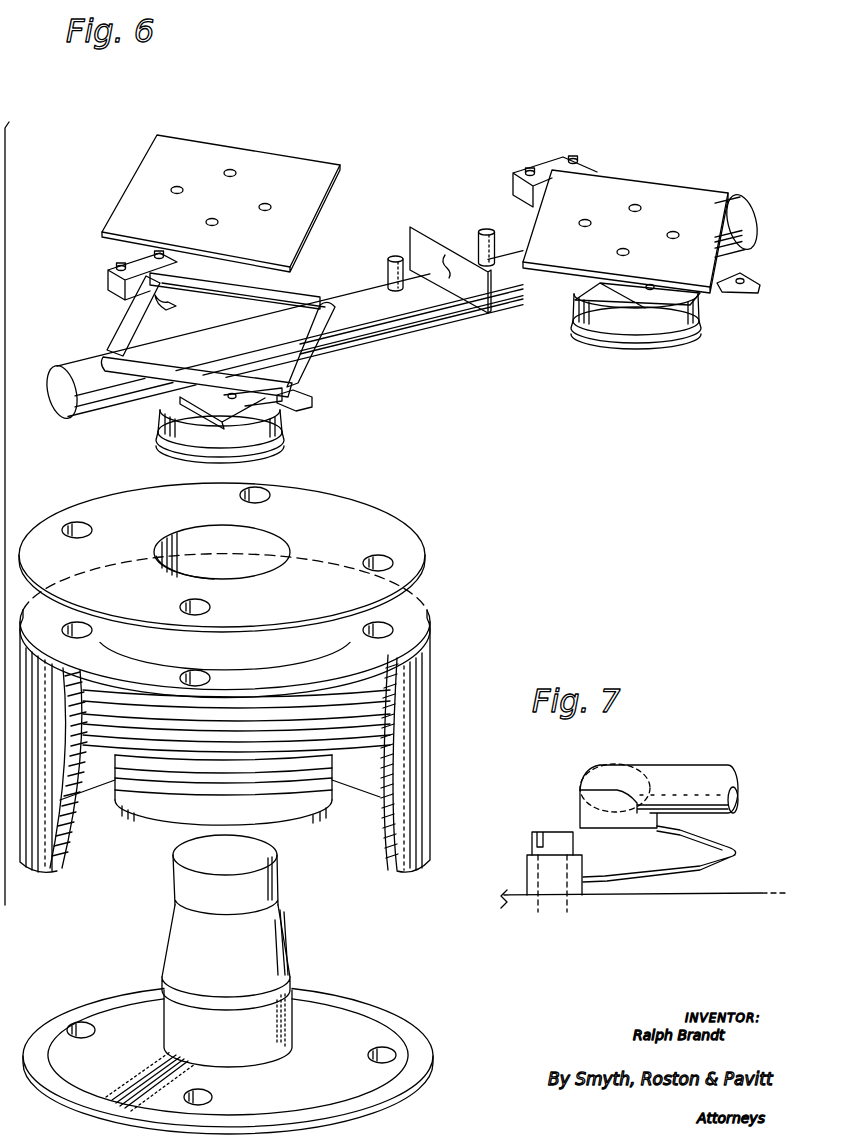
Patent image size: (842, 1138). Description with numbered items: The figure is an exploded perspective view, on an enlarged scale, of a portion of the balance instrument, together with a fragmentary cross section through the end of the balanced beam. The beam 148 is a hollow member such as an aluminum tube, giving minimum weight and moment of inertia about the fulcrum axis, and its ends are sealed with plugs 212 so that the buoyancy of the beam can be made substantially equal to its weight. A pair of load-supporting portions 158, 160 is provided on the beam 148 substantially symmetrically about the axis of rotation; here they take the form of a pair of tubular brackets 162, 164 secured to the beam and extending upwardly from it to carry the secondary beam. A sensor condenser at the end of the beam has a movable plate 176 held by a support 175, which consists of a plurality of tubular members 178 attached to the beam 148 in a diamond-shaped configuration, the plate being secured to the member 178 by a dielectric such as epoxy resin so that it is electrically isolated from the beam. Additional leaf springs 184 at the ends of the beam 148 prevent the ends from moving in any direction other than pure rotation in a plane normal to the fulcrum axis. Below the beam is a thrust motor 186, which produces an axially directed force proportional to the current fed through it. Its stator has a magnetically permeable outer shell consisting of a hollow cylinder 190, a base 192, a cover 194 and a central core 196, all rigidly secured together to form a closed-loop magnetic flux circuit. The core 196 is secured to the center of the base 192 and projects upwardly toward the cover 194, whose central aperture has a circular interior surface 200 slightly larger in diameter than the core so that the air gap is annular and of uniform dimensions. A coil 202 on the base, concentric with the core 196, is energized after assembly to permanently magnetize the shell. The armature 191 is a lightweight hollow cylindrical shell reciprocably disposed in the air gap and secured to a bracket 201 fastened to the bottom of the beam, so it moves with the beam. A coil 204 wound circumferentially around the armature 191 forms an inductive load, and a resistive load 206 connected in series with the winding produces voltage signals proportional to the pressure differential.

In FIG. 6, the beam 148 is at (428, 330).
In FIG. 6, the load-supporting portion 158 is at (412, 337).
In FIG. 6, the load-supporting portion 160 is at (516, 306).
In FIG. 6, the tubular bracket 162 is at (386, 275).
In FIG. 6, the tubular bracket 164 is at (478, 243).
In FIG. 6, the support 175 is at (292, 282).
In FIG. 6, the movable plate 176 is at (268, 153).
In FIG. 6, the tubular member 178 is at (693, 190).
In FIG. 7, the tubular member 178 is at (690, 782).
In FIG. 6, the leaf spring 184 is at (168, 306).
In FIG. 7, the leaf spring 184 is at (690, 860).
In FIG. 6, the thrust motor 186 is at (138, 873).
In FIG. 6, the hollow cylinder 190 is at (422, 714).
In FIG. 6, the armature 191 is at (276, 444).
In FIG. 6, the base 192 is at (368, 1030).
In FIG. 6, the cover 194 is at (368, 513).
In FIG. 6, the central core 196 is at (278, 922).
In FIG. 6, the circular interior surface 200 is at (263, 542).
In FIG. 6, the bracket 201 is at (162, 414).
In FIG. 6, the coil 202 is at (332, 771).
In FIG. 6, the coil 204 is at (187, 448).
In FIG. 6, the resistive load 206 is at (74, 714).
In FIG. 6, the plug 212 is at (53, 384).